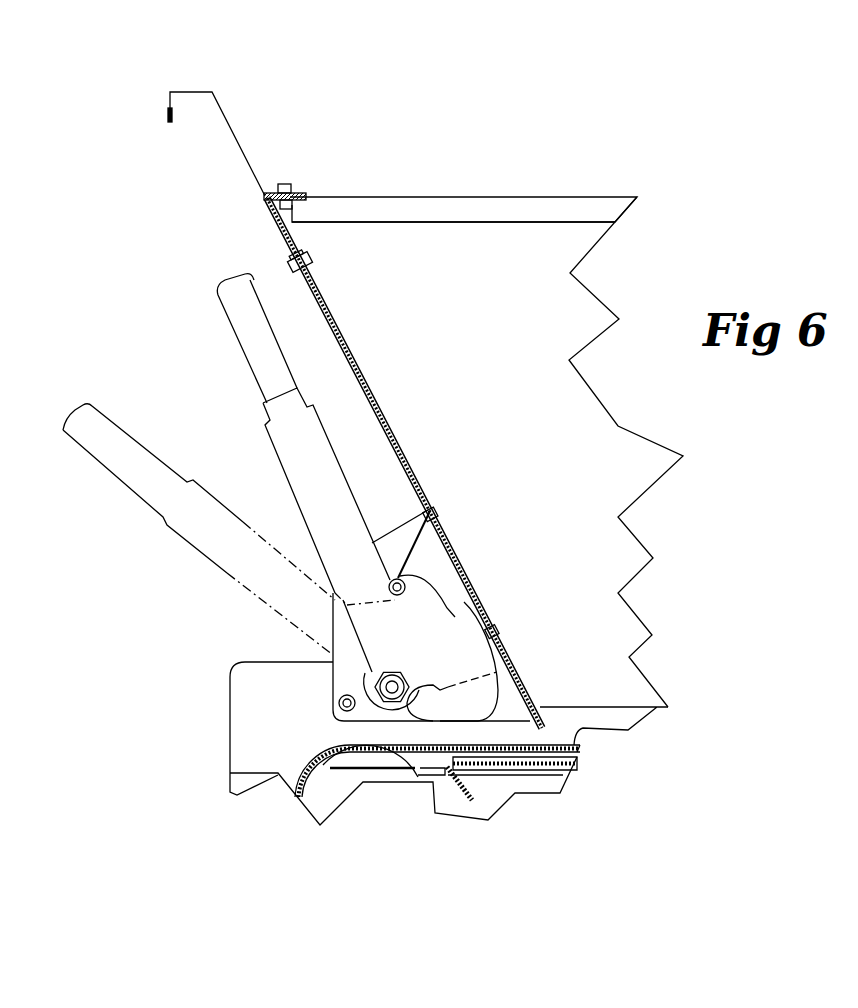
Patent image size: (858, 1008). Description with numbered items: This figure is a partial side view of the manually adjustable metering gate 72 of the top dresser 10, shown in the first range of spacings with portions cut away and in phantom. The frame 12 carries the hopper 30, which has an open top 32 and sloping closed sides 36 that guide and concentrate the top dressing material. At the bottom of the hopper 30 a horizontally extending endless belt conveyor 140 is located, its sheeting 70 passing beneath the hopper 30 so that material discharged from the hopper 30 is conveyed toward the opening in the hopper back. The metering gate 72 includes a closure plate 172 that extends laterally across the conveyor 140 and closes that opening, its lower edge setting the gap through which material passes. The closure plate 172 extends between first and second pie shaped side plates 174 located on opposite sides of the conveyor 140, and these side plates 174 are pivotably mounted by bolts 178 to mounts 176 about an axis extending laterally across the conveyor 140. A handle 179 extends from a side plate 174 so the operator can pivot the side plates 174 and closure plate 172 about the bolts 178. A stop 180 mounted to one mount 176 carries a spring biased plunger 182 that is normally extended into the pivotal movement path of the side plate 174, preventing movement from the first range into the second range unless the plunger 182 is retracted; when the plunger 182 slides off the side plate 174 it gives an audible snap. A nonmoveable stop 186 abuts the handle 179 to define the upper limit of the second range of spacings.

The top dresser 10 is at (655, 95).
The frame 12 is at (230, 773).
The hopper 30 is at (548, 197).
The open top 32 is at (397, 195).
The sloping closed sides 36 is at (543, 383).
The sheeting 70 is at (637, 707).
The metering gate 72 is at (502, 680).
The endless belt conveyor 140 is at (553, 745).
The closure plate 172 is at (490, 615).
The pie shaped side plates 174 is at (460, 630).
The mounts 176 is at (368, 675).
The bolts 178 is at (390, 683).
The handle 179 is at (257, 362).
The stop 180 is at (393, 580).
The spring biased plunger 182 is at (435, 510).
The nonmoveable stop 186 is at (339, 703).